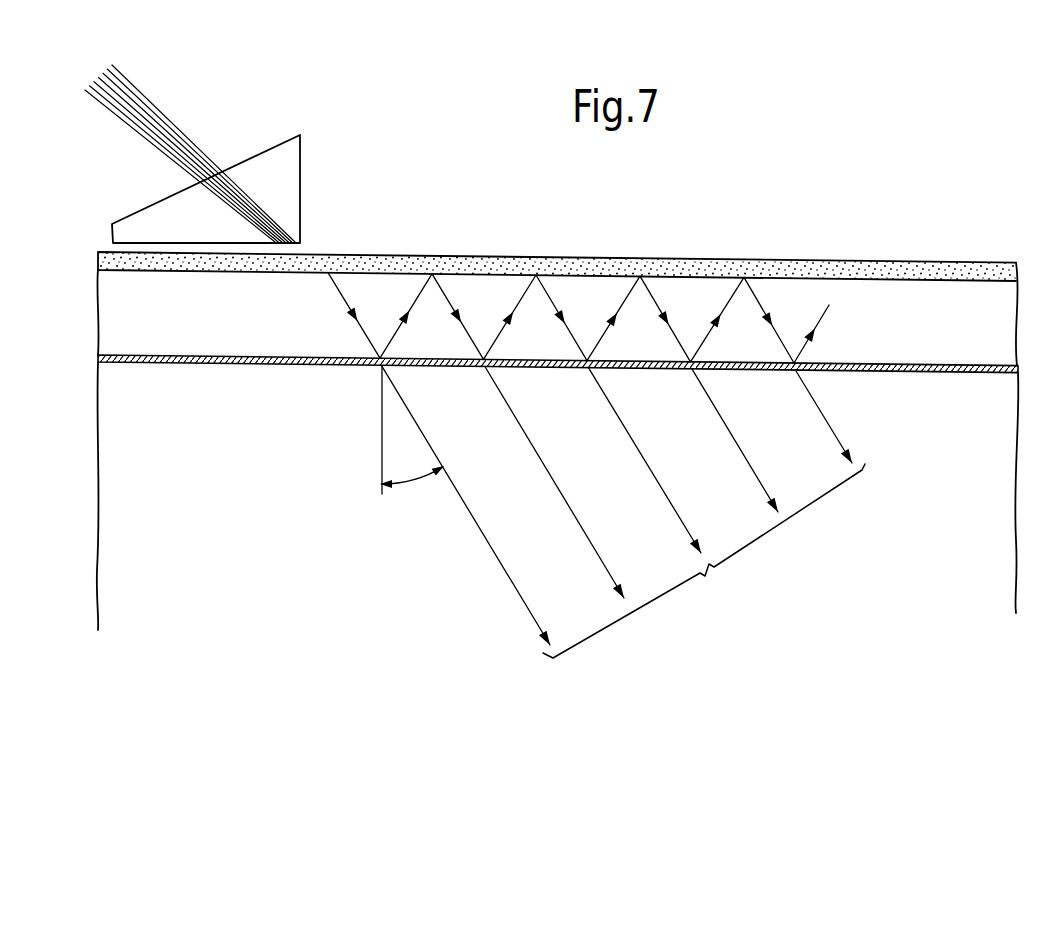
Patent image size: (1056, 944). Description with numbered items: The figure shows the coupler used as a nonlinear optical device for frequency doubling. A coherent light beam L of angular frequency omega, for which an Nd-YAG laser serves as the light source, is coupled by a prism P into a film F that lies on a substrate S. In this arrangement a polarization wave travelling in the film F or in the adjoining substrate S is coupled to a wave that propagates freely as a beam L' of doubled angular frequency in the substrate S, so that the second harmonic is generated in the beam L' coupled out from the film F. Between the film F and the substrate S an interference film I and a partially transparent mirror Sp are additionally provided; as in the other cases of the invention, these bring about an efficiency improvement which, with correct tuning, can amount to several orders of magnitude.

The film F is at (514, 260).
The interference film I is at (118, 328).
The partially transparent mirror Sp is at (210, 364).
The substrate S is at (104, 553).
The prism P is at (268, 158).
The coherent light beam L is at (170, 129).
The second harmonic beam L' is at (623, 512).